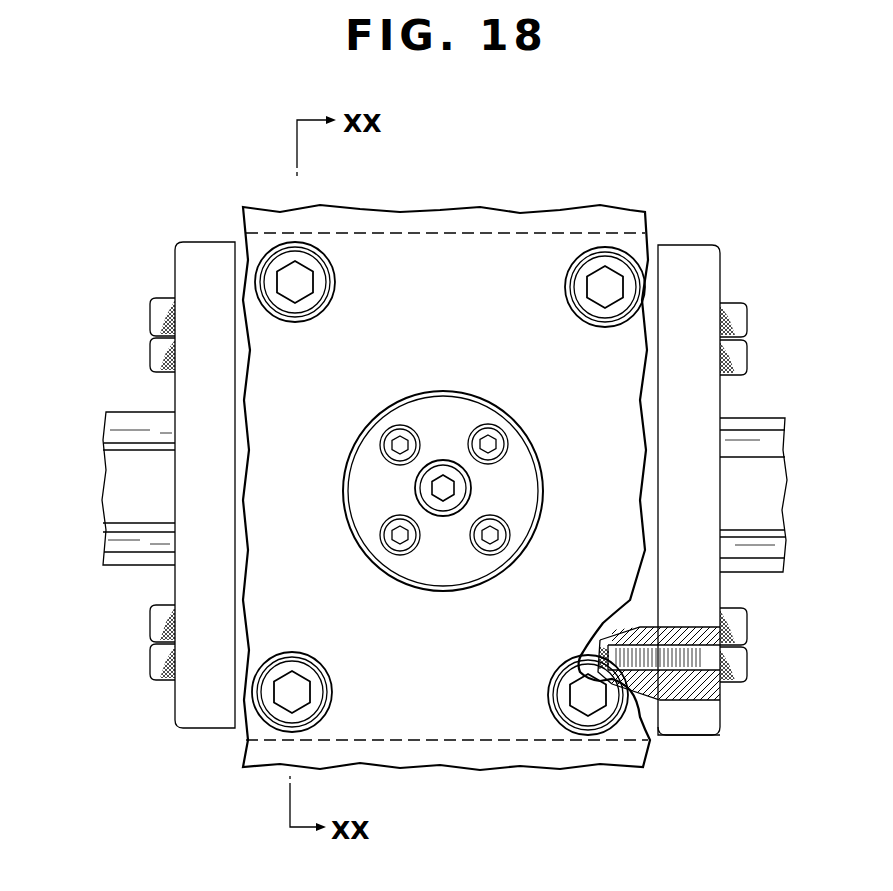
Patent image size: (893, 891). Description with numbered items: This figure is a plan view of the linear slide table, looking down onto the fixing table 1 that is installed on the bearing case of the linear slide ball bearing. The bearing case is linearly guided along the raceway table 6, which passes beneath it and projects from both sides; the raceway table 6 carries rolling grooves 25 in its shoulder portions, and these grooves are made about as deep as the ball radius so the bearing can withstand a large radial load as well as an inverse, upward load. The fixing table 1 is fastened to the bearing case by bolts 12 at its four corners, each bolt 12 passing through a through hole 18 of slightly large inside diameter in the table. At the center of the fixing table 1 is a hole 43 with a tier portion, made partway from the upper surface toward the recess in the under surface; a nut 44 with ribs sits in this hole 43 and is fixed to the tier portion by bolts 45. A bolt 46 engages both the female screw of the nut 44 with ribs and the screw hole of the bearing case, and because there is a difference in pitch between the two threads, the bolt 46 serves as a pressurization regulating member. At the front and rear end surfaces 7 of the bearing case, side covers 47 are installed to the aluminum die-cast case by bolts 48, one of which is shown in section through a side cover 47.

The fixing table 1 is at (421, 774).
The raceway table 6 is at (115, 510).
The front and rear end surfaces 7 is at (228, 278).
The bolts 12 is at (273, 250).
The through holes 18 is at (318, 248).
The rolling grooves 25 is at (130, 432).
The hole with a tier portion 43 is at (498, 562).
The nut with ribs 44 is at (457, 408).
The bolts 45 is at (383, 447).
The bolt 46 is at (448, 520).
The side covers 47 is at (700, 255).
The bolts 48 is at (160, 355).